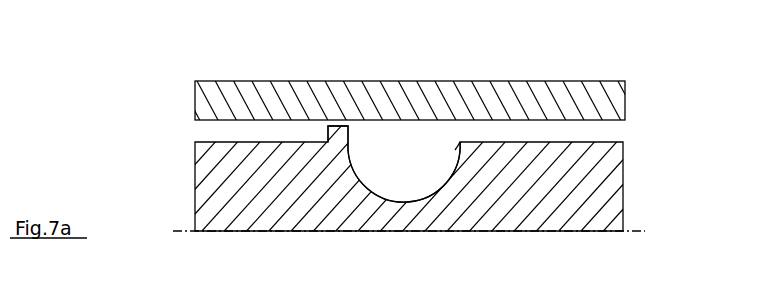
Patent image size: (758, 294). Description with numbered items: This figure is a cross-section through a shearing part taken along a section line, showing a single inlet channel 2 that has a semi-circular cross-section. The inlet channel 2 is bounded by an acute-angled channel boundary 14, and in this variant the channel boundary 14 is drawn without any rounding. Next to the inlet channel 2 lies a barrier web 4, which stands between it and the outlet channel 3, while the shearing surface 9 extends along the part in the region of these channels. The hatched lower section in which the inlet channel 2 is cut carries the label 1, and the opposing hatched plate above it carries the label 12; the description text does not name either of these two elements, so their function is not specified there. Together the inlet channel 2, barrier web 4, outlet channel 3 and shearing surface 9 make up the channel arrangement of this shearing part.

The lower body 1 is at (625, 188).
The inlet channel 2 is at (402, 185).
The outlet channel 3 is at (241, 130).
The barrier web 4 is at (338, 128).
The shearing surface 9 is at (297, 139).
The upper plate 12 is at (625, 97).
The channel boundary 14 is at (462, 143).